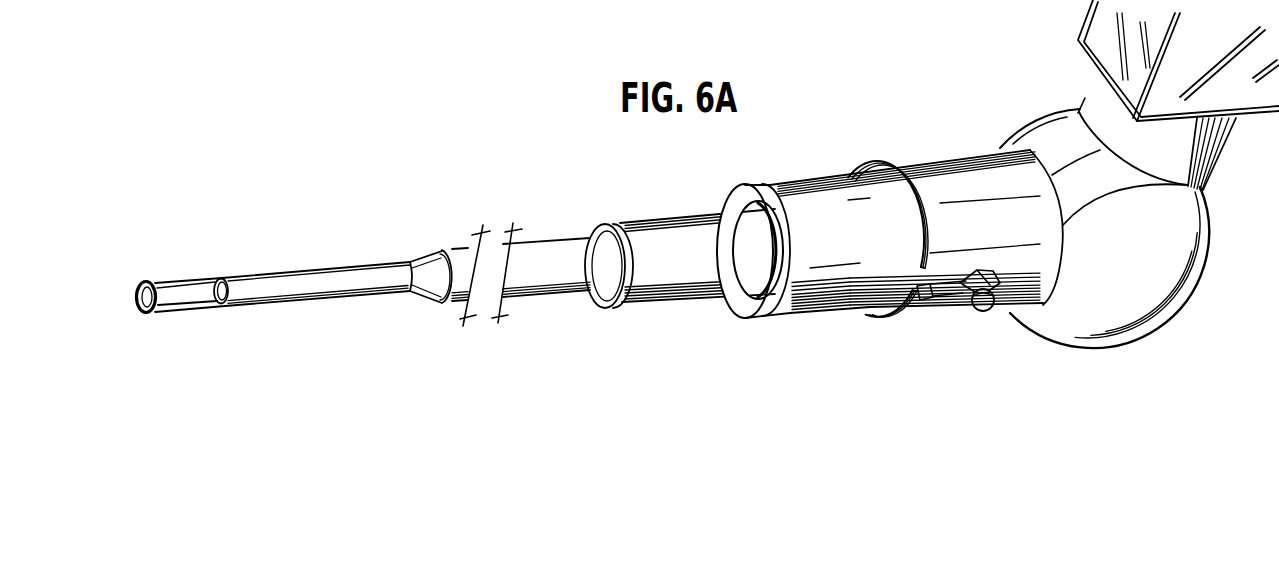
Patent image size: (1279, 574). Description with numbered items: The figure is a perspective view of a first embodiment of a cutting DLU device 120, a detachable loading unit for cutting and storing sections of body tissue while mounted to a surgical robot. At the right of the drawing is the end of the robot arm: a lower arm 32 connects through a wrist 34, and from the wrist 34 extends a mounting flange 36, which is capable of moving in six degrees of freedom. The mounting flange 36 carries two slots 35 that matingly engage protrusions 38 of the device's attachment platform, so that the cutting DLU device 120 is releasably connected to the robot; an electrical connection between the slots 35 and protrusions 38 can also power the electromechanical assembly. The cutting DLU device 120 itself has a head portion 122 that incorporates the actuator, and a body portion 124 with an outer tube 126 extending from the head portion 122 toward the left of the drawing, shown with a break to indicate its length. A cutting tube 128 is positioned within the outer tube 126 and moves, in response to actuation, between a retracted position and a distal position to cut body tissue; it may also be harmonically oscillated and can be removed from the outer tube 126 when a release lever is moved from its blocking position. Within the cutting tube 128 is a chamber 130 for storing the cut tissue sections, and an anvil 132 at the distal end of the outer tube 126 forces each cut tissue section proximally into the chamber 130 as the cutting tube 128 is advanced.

The cutting DLU device 120 is at (648, 183).
The head portion 122 is at (790, 186).
The body portion 124 is at (520, 262).
The outer tube 126 is at (313, 284).
The cutting tube 128 is at (157, 318).
The chamber 130 is at (175, 294).
The anvil 132 is at (151, 272).
The lower arm 32 is at (1277, 125).
The wrist 34 is at (1188, 228).
The slots 35 is at (932, 293).
The mounting flange 36 is at (907, 160).
The protrusions 38 is at (979, 298).